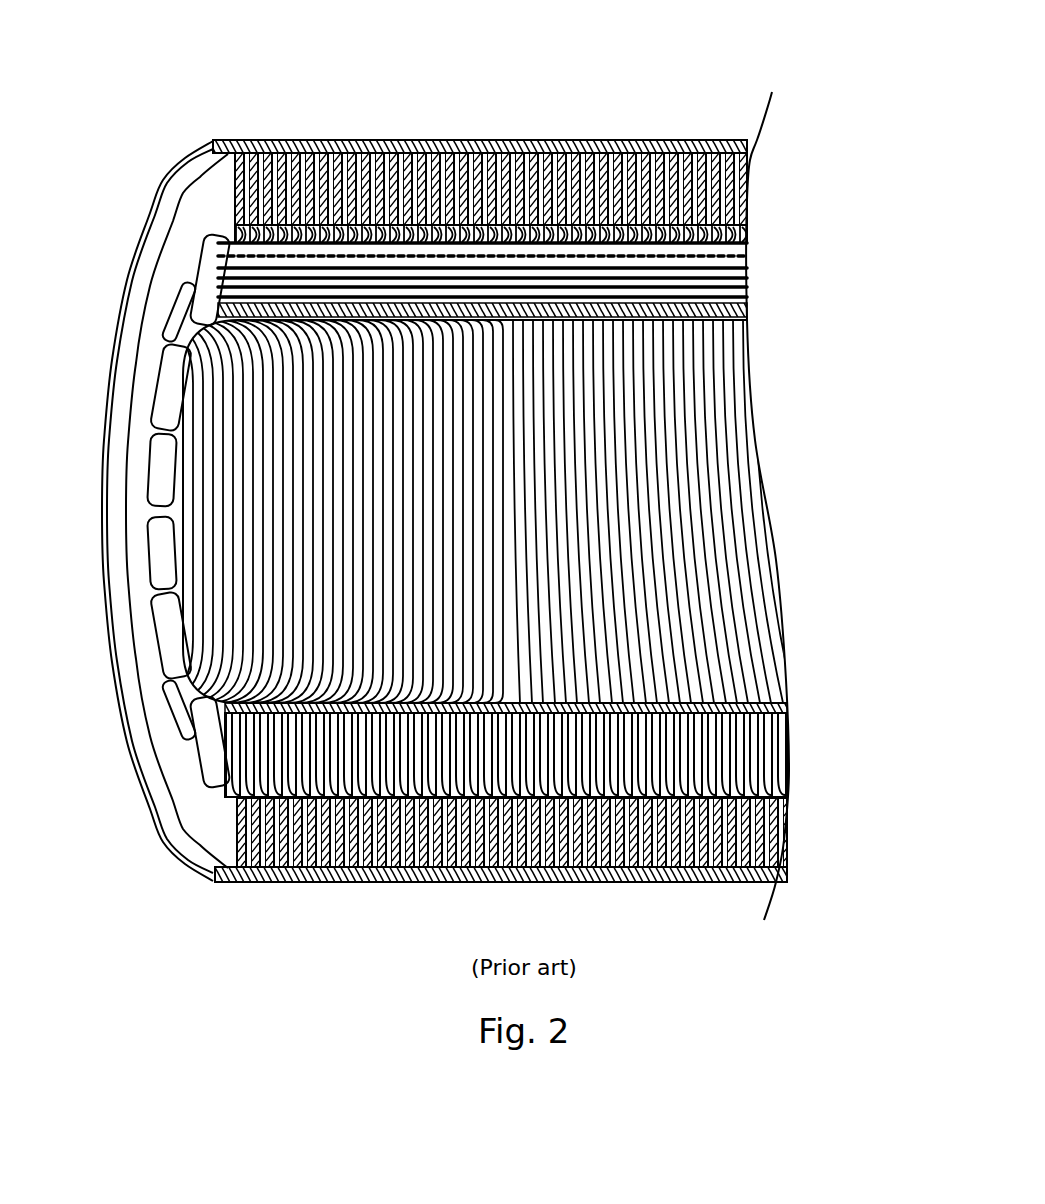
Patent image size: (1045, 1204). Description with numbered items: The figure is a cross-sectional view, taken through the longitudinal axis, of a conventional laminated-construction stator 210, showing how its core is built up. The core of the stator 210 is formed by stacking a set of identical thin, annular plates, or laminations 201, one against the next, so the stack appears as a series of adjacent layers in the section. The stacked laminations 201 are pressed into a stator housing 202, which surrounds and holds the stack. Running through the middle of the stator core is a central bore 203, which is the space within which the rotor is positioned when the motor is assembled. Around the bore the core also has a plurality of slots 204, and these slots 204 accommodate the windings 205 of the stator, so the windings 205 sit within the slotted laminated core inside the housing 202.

The stator 210 is at (634, 103).
The lamination 201 is at (527, 155).
The stator housing 202 is at (410, 140).
The central bore 203 is at (409, 500).
The slot 204 is at (180, 317).
The windings 205 is at (228, 222).